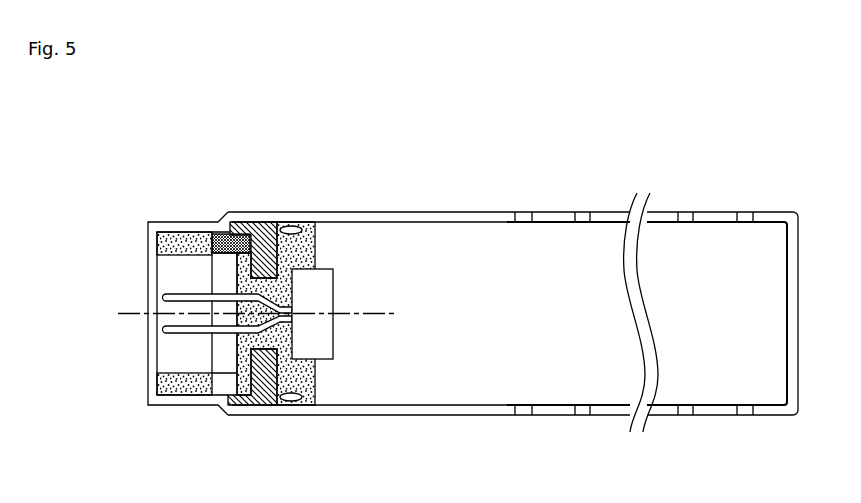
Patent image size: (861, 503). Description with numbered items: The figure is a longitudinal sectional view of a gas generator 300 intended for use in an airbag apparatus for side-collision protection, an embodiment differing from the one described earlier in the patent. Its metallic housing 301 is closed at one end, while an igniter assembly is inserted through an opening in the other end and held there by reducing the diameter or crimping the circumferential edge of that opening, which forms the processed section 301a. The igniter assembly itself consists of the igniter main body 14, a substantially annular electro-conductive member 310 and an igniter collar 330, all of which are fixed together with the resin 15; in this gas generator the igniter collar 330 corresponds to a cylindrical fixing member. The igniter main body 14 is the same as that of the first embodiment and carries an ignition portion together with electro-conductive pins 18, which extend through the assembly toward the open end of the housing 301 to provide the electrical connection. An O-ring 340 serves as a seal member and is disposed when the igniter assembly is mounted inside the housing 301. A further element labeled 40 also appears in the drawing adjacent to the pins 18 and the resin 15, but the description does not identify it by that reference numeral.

The igniter main body 14 is at (336, 294).
The resin 15 is at (174, 233).
The electro-conductive pins 18 is at (165, 330).
The base member 40 is at (170, 272).
The gas generator 300 is at (440, 299).
The housing 301 is at (382, 417).
The processed section 301a is at (221, 409).
The electro-conductive member 310 is at (218, 232).
The igniter collar 330 is at (259, 226).
The O-ring 340 is at (289, 403).